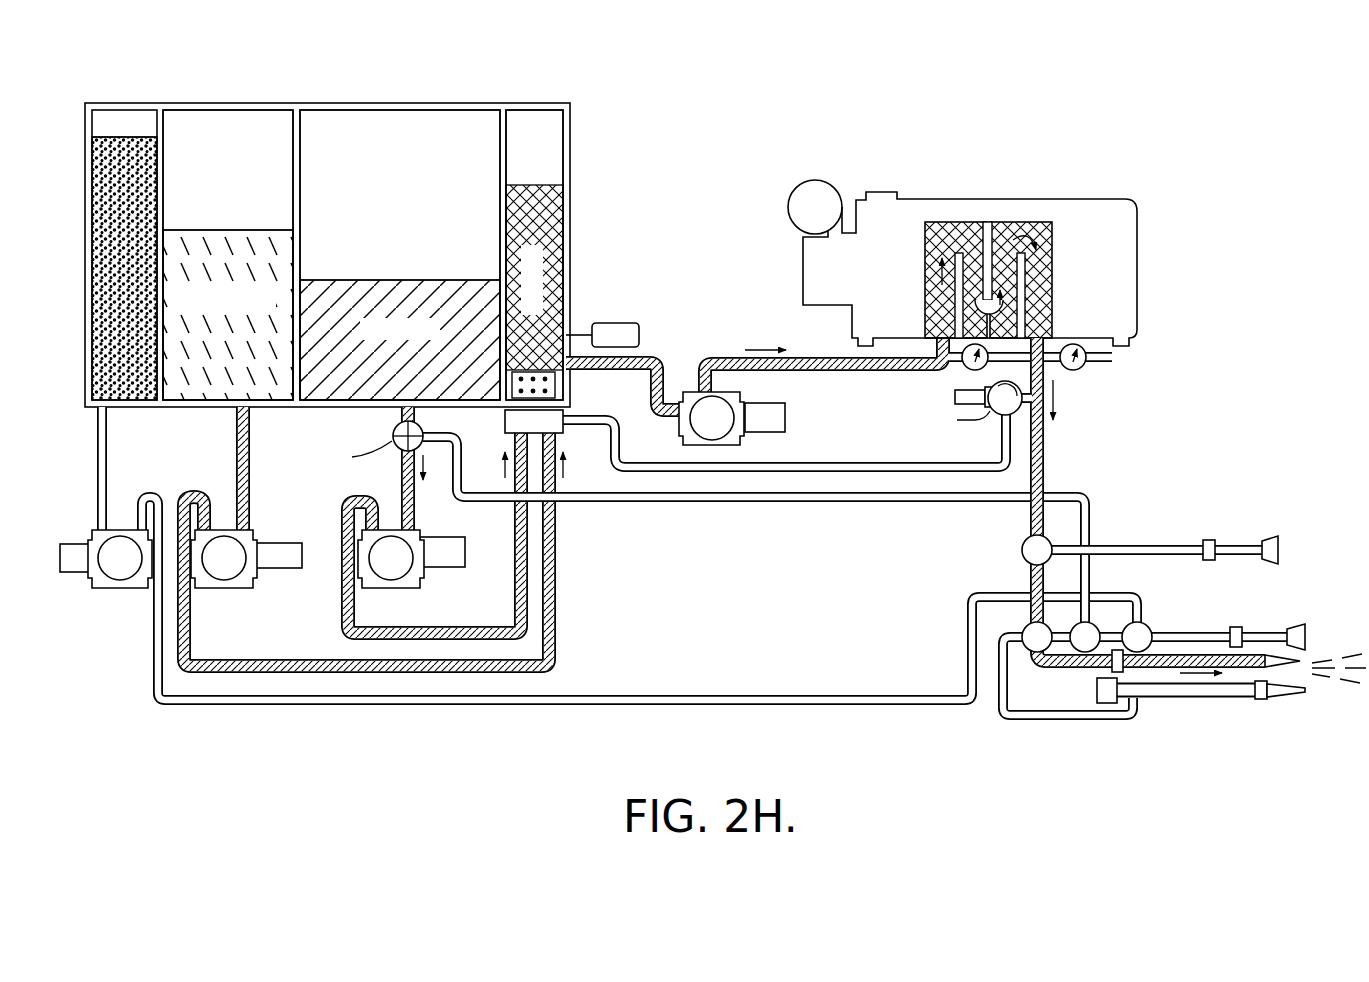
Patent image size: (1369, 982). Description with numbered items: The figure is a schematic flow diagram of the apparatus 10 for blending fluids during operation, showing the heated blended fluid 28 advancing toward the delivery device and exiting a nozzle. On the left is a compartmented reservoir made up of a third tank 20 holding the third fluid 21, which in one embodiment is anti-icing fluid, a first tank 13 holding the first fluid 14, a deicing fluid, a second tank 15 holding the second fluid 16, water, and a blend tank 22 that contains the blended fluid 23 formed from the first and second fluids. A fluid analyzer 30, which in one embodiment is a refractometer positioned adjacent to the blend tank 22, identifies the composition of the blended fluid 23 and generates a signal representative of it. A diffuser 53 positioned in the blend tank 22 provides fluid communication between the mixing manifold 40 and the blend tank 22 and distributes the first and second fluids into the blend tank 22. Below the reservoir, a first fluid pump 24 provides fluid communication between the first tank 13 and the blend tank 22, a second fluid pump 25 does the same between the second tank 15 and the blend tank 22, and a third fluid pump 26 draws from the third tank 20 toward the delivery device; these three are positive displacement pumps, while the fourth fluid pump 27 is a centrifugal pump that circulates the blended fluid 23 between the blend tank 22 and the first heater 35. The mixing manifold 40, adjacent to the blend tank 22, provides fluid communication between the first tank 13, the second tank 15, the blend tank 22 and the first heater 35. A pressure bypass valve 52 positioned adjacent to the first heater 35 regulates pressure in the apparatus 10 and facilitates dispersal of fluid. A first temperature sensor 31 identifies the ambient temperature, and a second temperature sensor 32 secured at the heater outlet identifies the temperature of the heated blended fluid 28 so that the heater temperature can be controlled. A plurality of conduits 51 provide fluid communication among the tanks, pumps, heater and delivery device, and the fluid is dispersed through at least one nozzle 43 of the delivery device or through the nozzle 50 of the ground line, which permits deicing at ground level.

The apparatus 10 is at (622, 118).
The first tank 13 is at (231, 112).
The first fluid 14 is at (228, 243).
The second tank 15 is at (384, 115).
The second fluid 16 is at (413, 290).
The third tank 20 is at (133, 104).
The third fluid 21 is at (107, 145).
The blend tank 22 is at (550, 126).
The blended fluid 23 is at (556, 210).
The first fluid pump 24 is at (221, 591).
The second fluid pump 25 is at (393, 584).
The third fluid pump 26 is at (119, 590).
The fourth fluid pump 27 is at (713, 447).
The heated blended fluid 28 is at (1042, 478).
The fluid analyzer 30 is at (616, 325).
The first temperature sensor 31 is at (990, 354).
The second temperature sensor 32 is at (1101, 362).
The first heater 35 is at (921, 197).
The mixing manifold 40 is at (506, 418).
The nozzle 43 is at (1281, 628).
The nozzle 50 is at (1263, 540).
The conduits 51 is at (853, 463).
The pressure bypass valve 52 is at (1012, 406).
The diffuser 53 is at (556, 389).